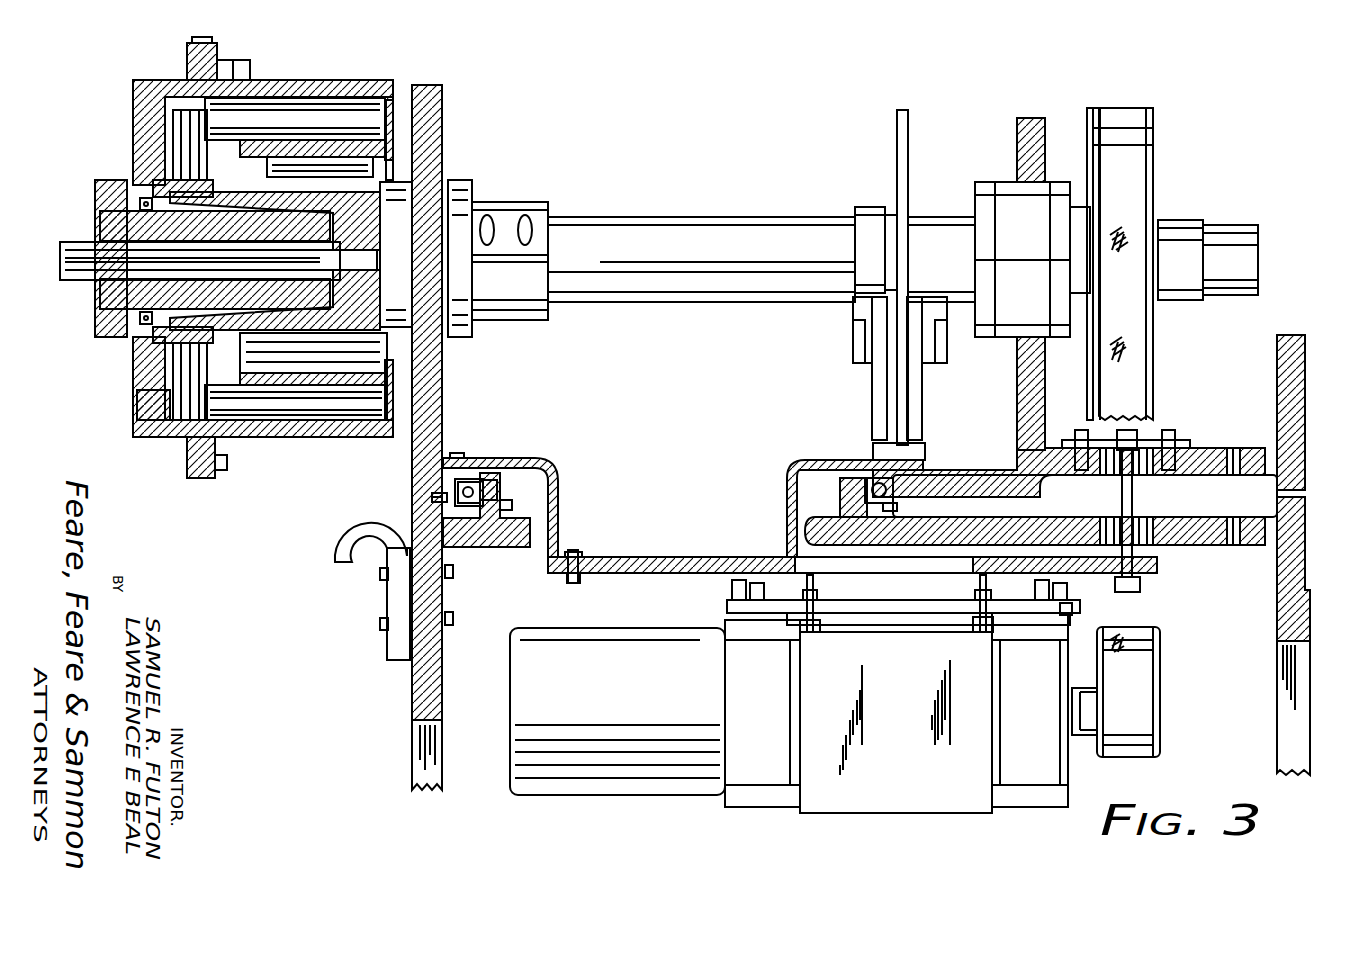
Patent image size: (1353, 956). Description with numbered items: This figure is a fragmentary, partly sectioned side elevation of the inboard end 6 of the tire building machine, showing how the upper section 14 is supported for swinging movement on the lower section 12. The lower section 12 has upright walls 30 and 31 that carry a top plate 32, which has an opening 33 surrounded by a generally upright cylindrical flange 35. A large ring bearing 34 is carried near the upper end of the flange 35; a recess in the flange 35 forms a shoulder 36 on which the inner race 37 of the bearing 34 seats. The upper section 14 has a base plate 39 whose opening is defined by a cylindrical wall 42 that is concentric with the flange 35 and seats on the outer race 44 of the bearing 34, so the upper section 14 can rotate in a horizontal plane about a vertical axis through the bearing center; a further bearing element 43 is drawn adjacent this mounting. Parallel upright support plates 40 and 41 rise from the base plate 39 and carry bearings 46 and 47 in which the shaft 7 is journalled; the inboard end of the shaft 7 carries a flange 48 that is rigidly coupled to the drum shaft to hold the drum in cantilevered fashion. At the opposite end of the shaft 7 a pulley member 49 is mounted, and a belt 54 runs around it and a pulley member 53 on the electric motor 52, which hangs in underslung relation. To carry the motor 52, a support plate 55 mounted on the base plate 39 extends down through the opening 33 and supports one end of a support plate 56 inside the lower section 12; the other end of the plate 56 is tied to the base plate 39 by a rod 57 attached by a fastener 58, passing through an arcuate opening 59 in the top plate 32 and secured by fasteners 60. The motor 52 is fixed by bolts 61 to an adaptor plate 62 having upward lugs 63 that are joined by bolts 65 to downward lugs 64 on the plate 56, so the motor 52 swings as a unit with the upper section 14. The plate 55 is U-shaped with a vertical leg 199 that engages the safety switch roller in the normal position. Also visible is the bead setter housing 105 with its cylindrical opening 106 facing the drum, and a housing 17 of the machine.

The inboard end 6 is at (410, 680).
The shaft 7 is at (772, 217).
The lower section 12 is at (1308, 585).
The upper section 14 is at (1278, 366).
The clutch housing 17 is at (303, 78).
The upright wall 30 is at (412, 740).
The upright wall 31 is at (1308, 650).
The top plate 32 is at (490, 547).
The opening 33 is at (560, 573).
The ring bearing 34 is at (430, 498).
The cylindrical flange 35 is at (497, 490).
The shoulder 36 is at (502, 505).
The inner race 37 is at (466, 482).
The base plate 39 is at (972, 470).
The support plate 40 is at (442, 100).
The support plate 41 is at (1028, 118).
The cylindrical wall 42 is at (860, 470).
The bearing 43 is at (885, 505).
The outer race 44 is at (457, 488).
The bearing 46 is at (458, 185).
The bearing 47 is at (995, 182).
The flange 48 is at (95, 200).
The pulley member 49 is at (1090, 108).
The electric motor 52 is at (908, 786).
The pulley member 53 is at (1160, 700).
The belt 54 is at (1110, 108).
The support plate 55 is at (787, 490).
The support plate 56 is at (1143, 462).
The rod 57 is at (1122, 500).
The fastener 58 is at (1135, 435).
The opening 59 is at (1150, 545).
The fasteners 60 is at (1138, 590).
The bolts 61 is at (810, 632).
The adaptor plate 62 is at (845, 620).
The lugs 63 is at (727, 606).
The lugs 64 is at (732, 590).
The bolts 65 is at (793, 557).
The housing 105 is at (352, 80).
The cylindrical opening 106 is at (390, 130).
The leg 199 is at (559, 500).